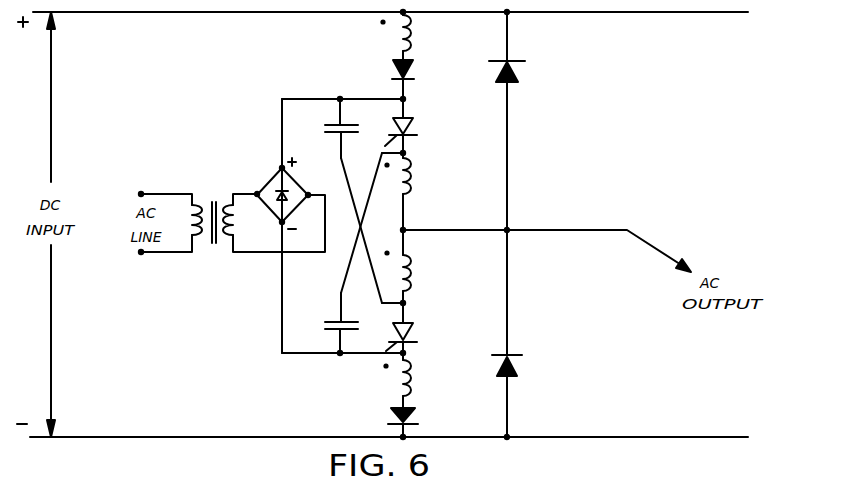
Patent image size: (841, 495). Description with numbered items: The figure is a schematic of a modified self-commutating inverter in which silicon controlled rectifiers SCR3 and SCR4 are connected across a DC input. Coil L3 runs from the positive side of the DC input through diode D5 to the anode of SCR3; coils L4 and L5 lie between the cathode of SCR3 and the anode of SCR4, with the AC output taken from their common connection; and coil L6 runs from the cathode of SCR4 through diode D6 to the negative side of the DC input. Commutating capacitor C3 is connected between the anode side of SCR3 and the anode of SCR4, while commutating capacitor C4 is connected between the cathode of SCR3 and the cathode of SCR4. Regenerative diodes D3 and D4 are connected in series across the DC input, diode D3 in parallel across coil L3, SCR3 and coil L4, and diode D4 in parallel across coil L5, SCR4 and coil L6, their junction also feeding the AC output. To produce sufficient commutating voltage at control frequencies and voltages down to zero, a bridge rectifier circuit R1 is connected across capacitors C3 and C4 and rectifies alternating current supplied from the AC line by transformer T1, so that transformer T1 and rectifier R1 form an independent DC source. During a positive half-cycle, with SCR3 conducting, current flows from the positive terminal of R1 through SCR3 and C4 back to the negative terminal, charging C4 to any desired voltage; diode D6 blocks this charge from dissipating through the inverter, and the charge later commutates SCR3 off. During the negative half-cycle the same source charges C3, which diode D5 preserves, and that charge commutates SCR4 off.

The coil L3 is at (407, 33).
The diode D5 is at (415, 70).
The silicon controlled rectifier SCR3 is at (411, 127).
The coil L4 is at (407, 179).
The coil L5 is at (407, 271).
The silicon controlled rectifier SCR4 is at (412, 332).
The coil L6 is at (407, 377).
The diode D6 is at (414, 419).
The commutating capacitor C3 is at (327, 126).
The commutating capacitor C4 is at (326, 322).
The bridge rectifier circuit R1 is at (297, 181).
The transformer T1 is at (211, 253).
The regenerative diode D3 is at (519, 76).
The regenerative diode D4 is at (518, 372).